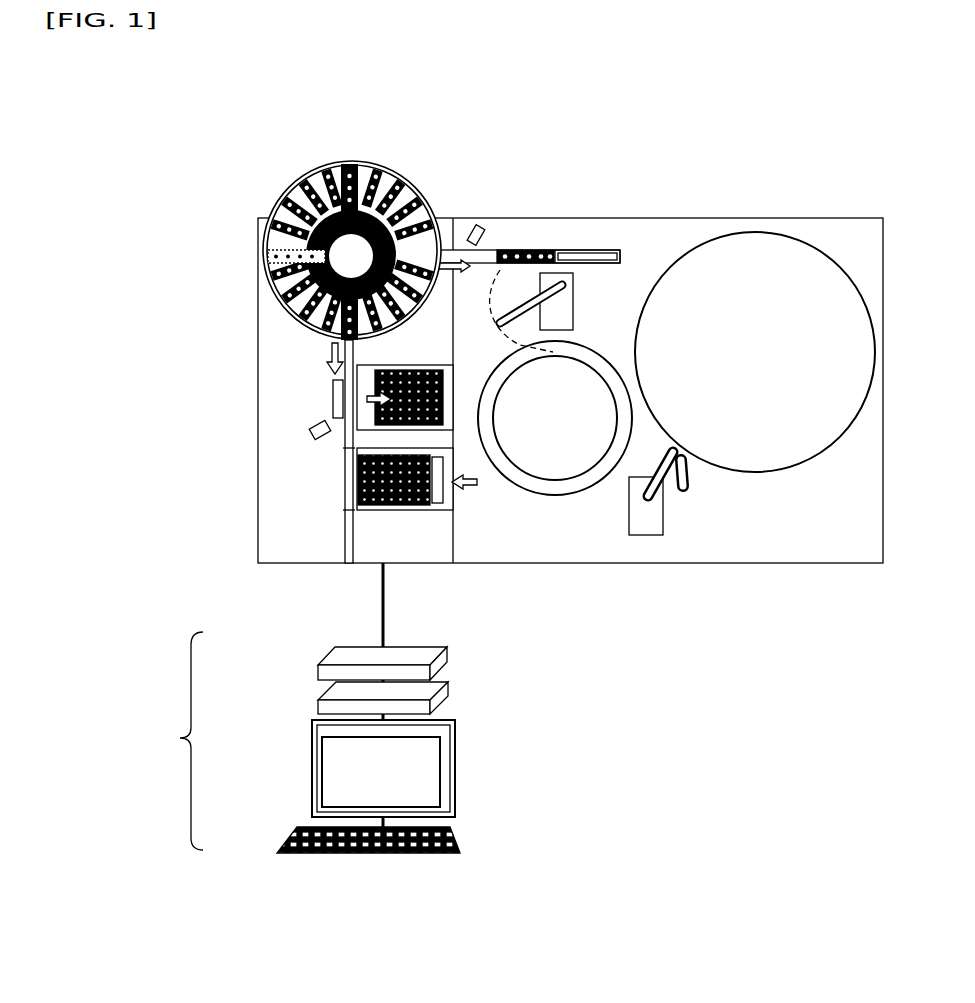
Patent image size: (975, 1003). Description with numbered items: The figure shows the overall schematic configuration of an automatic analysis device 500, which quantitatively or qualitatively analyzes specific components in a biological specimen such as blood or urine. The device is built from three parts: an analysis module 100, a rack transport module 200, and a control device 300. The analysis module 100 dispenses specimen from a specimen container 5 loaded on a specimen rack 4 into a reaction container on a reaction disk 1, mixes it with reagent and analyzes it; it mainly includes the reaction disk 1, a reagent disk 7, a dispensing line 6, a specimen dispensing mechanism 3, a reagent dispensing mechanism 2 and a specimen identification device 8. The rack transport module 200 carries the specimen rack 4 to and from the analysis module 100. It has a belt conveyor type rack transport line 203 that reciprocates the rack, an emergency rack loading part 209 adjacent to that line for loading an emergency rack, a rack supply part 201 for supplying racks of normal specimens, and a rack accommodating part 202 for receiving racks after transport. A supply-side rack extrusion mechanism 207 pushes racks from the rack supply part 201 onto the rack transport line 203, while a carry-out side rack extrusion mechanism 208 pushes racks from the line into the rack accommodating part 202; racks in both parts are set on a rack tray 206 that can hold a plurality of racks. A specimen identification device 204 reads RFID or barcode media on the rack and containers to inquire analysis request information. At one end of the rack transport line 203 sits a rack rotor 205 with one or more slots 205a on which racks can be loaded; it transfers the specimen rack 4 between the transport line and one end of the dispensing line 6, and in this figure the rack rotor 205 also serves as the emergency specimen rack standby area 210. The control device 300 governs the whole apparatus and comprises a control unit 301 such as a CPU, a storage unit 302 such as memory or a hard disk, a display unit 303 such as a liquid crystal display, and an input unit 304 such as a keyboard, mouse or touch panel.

The automatic analysis device 500 is at (537, 79).
The analysis module 100 is at (812, 218).
The rack transport module 200 is at (352, 218).
The rack rotor 205 is at (358, 172).
The emergency specimen rack standby area 210 is at (290, 120).
The slot 205a is at (428, 216).
The specimen identification device 8 is at (478, 226).
The specimen rack 4 is at (505, 250).
The specimen container 5 is at (545, 250).
The specimen dispensing mechanism 3 is at (573, 250).
The dispensing line 6 is at (607, 258).
The reaction disk 1 is at (568, 484).
The reagent dispensing mechanism 2 is at (643, 490).
The reagent disk 7 is at (760, 446).
The carry-out side rack extrusion mechanism 208 is at (330, 378).
The rack tray 206 is at (332, 395).
The rack transport line 203 is at (343, 414).
The specimen identification device 204 is at (310, 432).
The emergency rack loading part 209 is at (347, 540).
The rack supply part 201 is at (455, 490).
The rack accommodating part 202 is at (457, 427).
The supply-side rack extrusion mechanism 207 is at (450, 427).
The control device 300 is at (295, 708).
The control unit 301 is at (330, 653).
The storage unit 302 is at (333, 690).
The display unit 303 is at (330, 771).
The input unit 304 is at (300, 830).